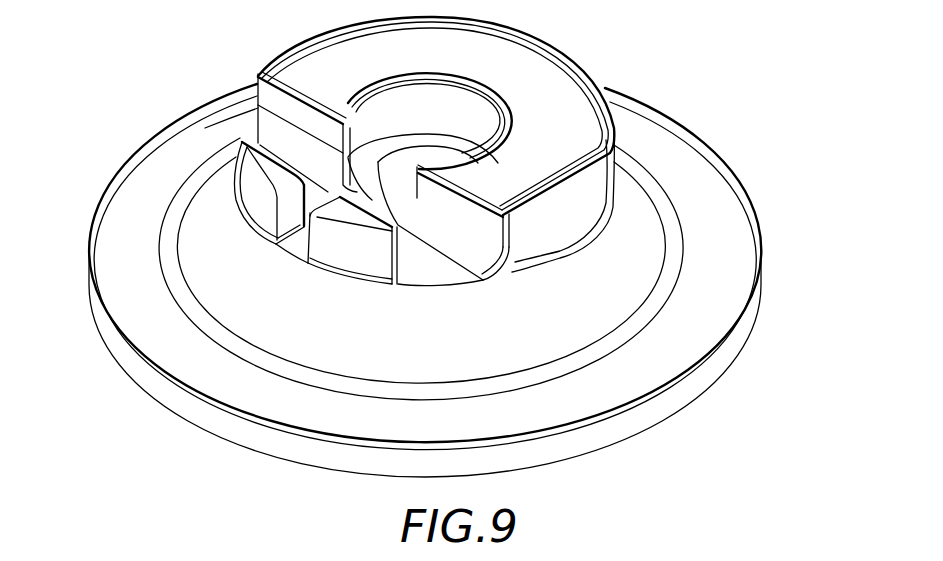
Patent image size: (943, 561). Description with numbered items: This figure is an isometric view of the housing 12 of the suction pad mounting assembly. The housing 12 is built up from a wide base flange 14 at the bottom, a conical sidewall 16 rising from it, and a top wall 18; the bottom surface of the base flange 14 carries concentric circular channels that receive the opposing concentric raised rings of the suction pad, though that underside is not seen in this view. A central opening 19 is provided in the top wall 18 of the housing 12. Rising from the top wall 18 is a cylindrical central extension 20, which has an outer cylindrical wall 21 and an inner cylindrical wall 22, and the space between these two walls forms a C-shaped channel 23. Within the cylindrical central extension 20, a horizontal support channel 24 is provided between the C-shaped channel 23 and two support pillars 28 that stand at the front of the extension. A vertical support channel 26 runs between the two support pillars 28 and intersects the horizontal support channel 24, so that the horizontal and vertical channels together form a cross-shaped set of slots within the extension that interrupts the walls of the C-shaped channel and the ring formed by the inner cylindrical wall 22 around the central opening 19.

The housing 12 is at (404, 239).
The base flange 14 is at (118, 292).
The conical sidewall 16 is at (206, 242).
The top wall 18 is at (385, 210).
The central opening 19 is at (407, 158).
The cylindrical central extension 20 is at (485, 137).
The outer cylindrical wall 21 is at (580, 73).
The inner cylindrical wall 22 is at (481, 87).
The C-shaped channel 23 is at (522, 126).
The horizontal support channel 24 is at (283, 133).
The vertical support channel 26 is at (298, 247).
The support pillars 28 is at (263, 203).